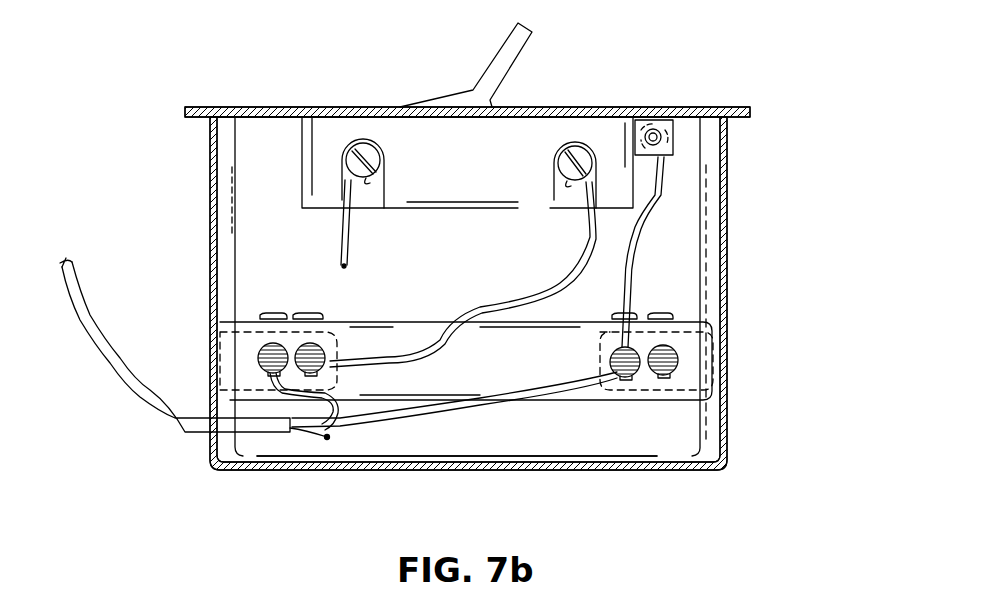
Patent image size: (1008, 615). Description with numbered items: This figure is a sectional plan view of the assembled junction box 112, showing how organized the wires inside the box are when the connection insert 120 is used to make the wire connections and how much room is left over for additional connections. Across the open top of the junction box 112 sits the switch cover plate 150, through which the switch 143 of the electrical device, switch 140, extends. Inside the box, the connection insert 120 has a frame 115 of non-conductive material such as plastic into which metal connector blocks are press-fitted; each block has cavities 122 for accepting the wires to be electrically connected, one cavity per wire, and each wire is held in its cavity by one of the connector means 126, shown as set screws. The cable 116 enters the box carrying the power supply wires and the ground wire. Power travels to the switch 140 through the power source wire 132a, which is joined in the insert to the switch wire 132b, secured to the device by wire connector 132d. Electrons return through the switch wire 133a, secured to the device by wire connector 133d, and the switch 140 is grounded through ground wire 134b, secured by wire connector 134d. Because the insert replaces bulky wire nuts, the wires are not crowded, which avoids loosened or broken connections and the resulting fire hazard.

The junction box 112 is at (738, 417).
The frame 115 is at (547, 404).
The cable 116 is at (133, 390).
The connection insert 120 is at (572, 407).
The cavity 122 is at (303, 346).
The connector means 126 is at (270, 310).
The power source wire 132a is at (327, 437).
The switch wire 132b is at (341, 233).
The wire connector 132d is at (378, 148).
The switch wire 133a is at (593, 243).
The wire connector 133d is at (557, 157).
The ground wire 134b is at (664, 190).
The wire connector 134d is at (657, 133).
The switch 140 is at (278, 163).
The switch 143 is at (503, 50).
The switch cover plate 150 is at (725, 107).